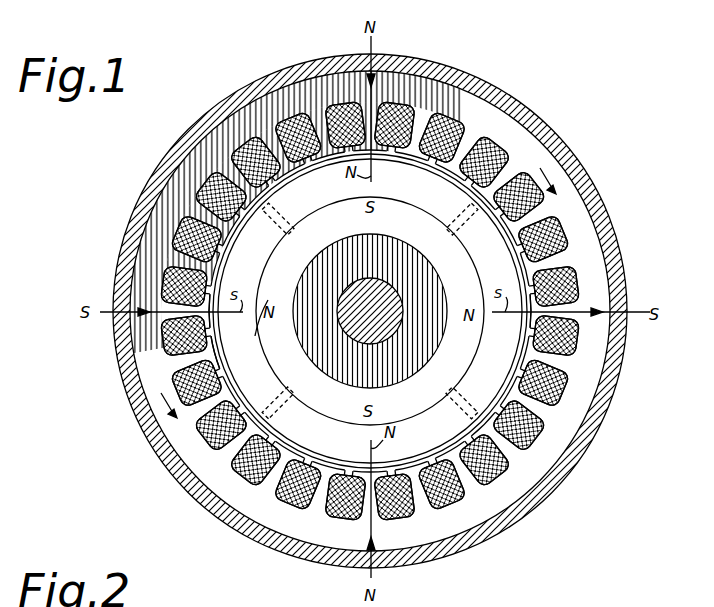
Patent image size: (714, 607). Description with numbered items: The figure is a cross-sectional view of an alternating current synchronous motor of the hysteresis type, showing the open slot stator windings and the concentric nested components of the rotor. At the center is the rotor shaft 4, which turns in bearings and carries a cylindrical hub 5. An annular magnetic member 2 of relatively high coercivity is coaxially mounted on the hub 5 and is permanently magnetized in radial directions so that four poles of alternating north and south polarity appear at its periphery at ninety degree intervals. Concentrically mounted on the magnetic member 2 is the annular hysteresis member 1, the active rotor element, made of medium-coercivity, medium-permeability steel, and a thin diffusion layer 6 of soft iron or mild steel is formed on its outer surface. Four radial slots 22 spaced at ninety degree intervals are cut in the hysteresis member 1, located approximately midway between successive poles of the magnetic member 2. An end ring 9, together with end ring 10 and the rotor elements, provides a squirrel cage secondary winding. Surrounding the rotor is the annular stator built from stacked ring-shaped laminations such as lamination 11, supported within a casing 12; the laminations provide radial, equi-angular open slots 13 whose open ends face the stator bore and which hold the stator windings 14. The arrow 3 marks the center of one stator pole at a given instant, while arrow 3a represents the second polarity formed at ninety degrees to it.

The annular hysteresis member 1 is at (417, 194).
The annular magnetic member 2 is at (500, 227).
The arrow 3 is at (373, 94).
The arrow 3a is at (152, 316).
The rotor shaft 4 is at (380, 298).
The hub 5 is at (408, 262).
The diffusion layer 6 is at (387, 466).
The squirrel cage end ring 9 is at (240, 268).
The end ring 10 is at (257, 335).
The lamination 11 is at (595, 297).
The casing 12 is at (617, 237).
The open slots 13 is at (495, 142).
The coil 14 is at (570, 268).
The peripheral slots 22 is at (288, 212).